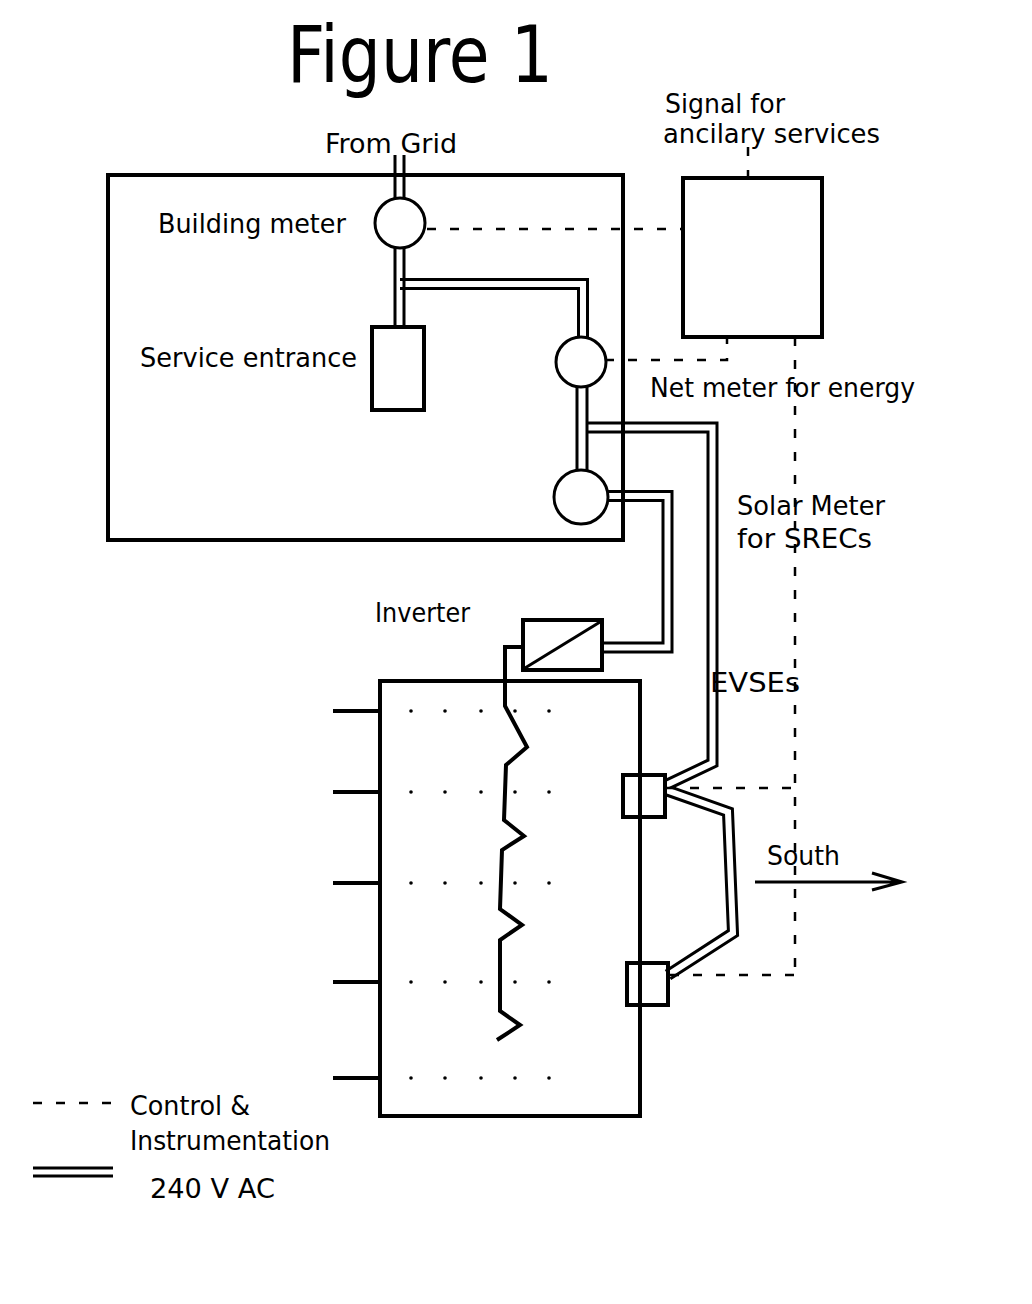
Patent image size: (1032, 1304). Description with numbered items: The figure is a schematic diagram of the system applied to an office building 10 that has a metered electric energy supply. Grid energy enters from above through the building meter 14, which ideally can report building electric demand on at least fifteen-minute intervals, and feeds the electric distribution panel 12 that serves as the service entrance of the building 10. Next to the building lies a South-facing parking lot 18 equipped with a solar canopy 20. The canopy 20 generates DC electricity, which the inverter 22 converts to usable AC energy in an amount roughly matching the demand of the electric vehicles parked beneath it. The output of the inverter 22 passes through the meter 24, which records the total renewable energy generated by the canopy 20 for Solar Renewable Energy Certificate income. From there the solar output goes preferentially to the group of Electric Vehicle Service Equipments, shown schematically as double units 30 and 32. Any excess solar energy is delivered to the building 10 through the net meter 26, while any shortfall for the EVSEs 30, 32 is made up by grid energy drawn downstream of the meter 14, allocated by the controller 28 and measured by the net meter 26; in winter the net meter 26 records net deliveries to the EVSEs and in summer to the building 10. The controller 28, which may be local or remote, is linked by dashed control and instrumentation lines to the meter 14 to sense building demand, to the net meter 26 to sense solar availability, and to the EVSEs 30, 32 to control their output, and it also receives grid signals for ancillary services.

The office building 10 is at (257, 492).
The electric distribution panel 12 is at (398, 368).
The building meter 14 is at (400, 223).
The parking lot 18 is at (225, 887).
The solar canopy 20 is at (445, 858).
The inverter 22 is at (573, 620).
The meter 24 is at (581, 497).
The net meter 26 is at (581, 362).
The controller 28 is at (752, 257).
The electric vehicle service equipment 30 is at (657, 785).
The electric vehicle service equipment 32 is at (668, 995).